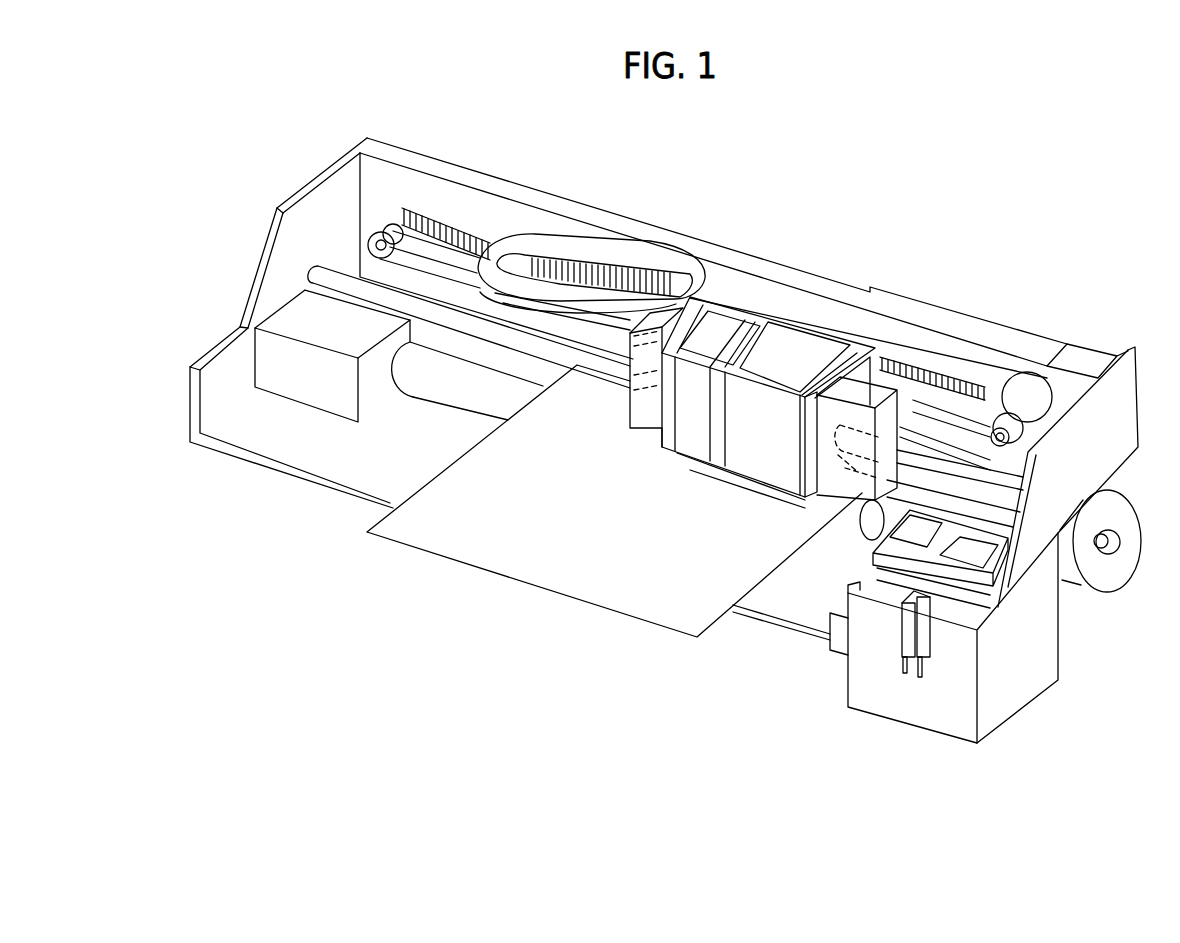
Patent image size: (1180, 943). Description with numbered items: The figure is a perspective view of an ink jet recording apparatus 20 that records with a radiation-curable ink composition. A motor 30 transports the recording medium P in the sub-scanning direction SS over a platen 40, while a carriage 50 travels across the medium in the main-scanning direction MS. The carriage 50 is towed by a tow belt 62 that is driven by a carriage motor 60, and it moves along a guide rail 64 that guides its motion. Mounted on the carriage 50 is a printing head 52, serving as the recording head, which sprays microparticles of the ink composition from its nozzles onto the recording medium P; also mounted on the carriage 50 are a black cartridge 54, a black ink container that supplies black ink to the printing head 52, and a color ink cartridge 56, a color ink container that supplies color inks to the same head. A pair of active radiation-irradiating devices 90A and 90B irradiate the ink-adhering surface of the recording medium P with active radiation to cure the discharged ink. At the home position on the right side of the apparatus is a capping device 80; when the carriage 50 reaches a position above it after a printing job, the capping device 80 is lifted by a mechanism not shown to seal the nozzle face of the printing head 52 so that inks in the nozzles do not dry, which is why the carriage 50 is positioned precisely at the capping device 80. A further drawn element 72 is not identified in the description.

The ink jet recording apparatus 20 is at (927, 193).
The motor 30 is at (1113, 545).
The platen 40 is at (433, 390).
The carriage 50 is at (713, 467).
The printing head 52 is at (773, 490).
The black cartridge 54 is at (737, 328).
The color ink cartridge 56 is at (800, 357).
The carriage motor 60 is at (1030, 390).
The tow belt 62 is at (427, 242).
The guide rail 64 is at (340, 275).
The linear encoder scale 72 is at (467, 237).
The capping device 80 is at (953, 533).
The active radiation-irradiating device 90A is at (614, 397).
The active radiation-irradiating device 90B is at (856, 480).
The main-scanning direction MS is at (687, 472).
The sub-scanning direction SS is at (547, 602).
The recording medium P is at (660, 590).